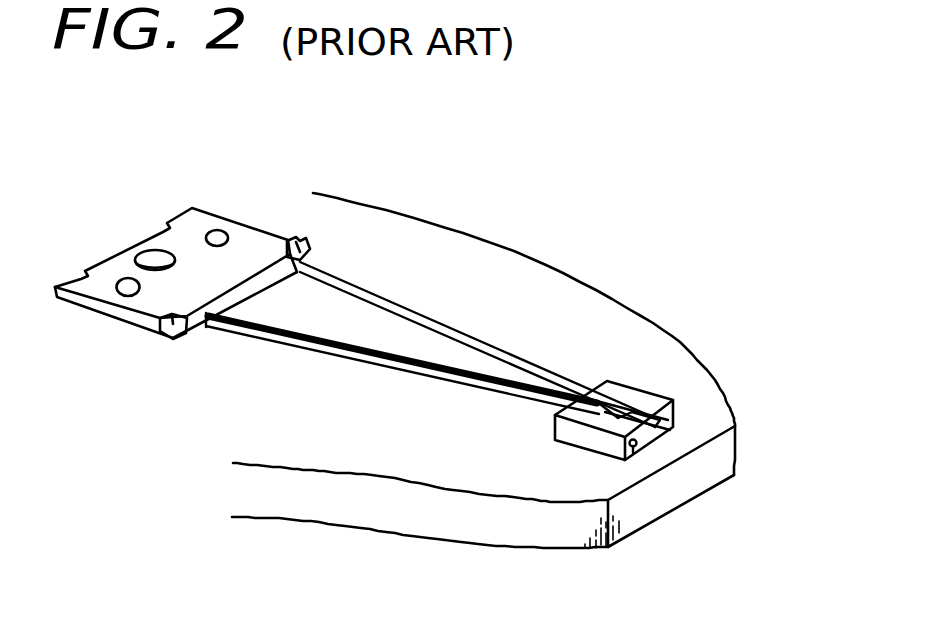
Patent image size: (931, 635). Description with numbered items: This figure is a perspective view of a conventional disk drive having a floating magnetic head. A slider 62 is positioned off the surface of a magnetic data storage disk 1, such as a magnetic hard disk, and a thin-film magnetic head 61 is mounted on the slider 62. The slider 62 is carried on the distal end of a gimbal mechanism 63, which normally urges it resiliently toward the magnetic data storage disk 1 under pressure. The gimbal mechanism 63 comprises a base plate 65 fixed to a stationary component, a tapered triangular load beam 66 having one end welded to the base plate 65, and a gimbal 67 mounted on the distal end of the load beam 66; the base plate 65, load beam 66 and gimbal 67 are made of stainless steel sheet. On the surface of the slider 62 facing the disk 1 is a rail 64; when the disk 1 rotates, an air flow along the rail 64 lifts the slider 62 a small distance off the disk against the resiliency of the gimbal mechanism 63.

The magnetic data storage disk 1 is at (722, 465).
The thin-film magnetic head 61 is at (634, 447).
The slider 62 is at (630, 384).
The gimbal mechanism 63 is at (368, 327).
The rail 64 is at (571, 452).
The base plate 65 is at (212, 216).
The load beam 66 is at (461, 352).
The gimbal 67 is at (658, 398).